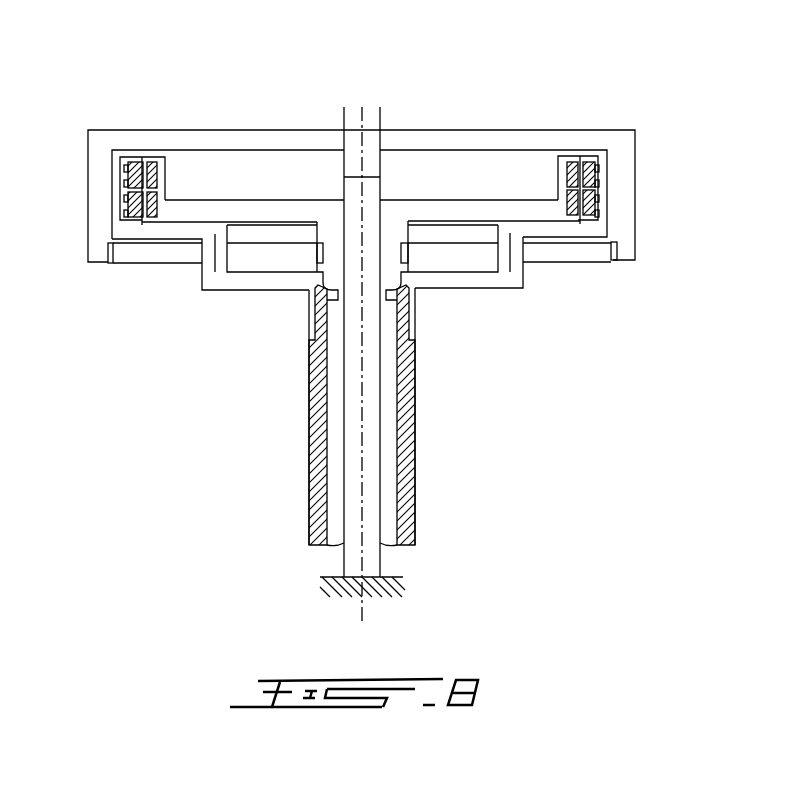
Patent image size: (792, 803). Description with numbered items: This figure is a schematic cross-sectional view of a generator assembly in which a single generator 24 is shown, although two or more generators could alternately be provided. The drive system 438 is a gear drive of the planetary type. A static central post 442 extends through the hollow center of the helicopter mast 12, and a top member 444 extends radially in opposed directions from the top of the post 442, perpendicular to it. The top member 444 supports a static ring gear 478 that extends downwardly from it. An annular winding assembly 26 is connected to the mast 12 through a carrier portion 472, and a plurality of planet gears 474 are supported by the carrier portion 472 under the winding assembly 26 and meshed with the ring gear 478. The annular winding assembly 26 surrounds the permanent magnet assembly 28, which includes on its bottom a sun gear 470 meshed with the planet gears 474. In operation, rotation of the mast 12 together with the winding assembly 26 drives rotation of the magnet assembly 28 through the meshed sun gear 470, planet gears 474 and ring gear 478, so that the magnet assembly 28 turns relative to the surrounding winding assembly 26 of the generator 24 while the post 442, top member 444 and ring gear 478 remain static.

The drive system 438 is at (660, 199).
The top member 444 is at (262, 142).
The generator 24 is at (511, 188).
The permanent magnet assembly 28 is at (570, 157).
The annular winding assembly 26 is at (587, 157).
The sun gear 470 is at (390, 230).
The carrier portion 472 is at (510, 262).
The planet gears 474 is at (588, 252).
The static ring gear 478 is at (625, 230).
The static central post 442 is at (370, 408).
The helicopter mast 12 is at (407, 479).